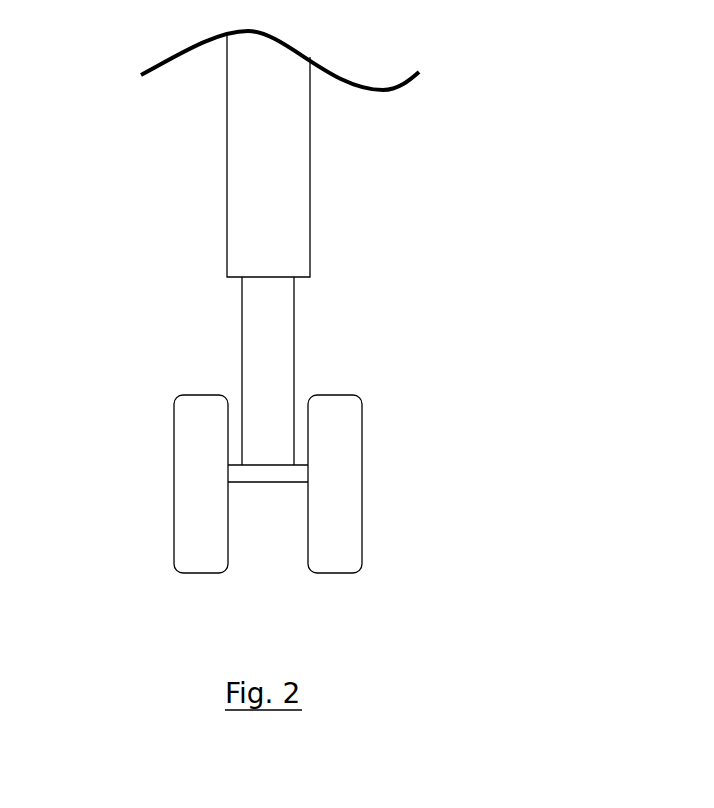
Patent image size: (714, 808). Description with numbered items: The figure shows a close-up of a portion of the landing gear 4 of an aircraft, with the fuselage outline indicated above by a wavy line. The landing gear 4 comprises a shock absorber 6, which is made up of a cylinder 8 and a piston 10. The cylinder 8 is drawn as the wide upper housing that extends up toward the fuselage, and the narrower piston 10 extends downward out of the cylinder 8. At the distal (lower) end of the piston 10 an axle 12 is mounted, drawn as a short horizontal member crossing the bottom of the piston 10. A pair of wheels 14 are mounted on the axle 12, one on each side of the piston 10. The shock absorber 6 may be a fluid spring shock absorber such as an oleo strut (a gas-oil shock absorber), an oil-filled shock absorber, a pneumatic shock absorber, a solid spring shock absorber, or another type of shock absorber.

The landing gear 4 is at (452, 117).
The shock absorber 6 is at (200, 271).
The cylinder 8 is at (253, 120).
The piston 10 is at (268, 368).
The axle 12 is at (262, 477).
The wheels 14 is at (207, 531).